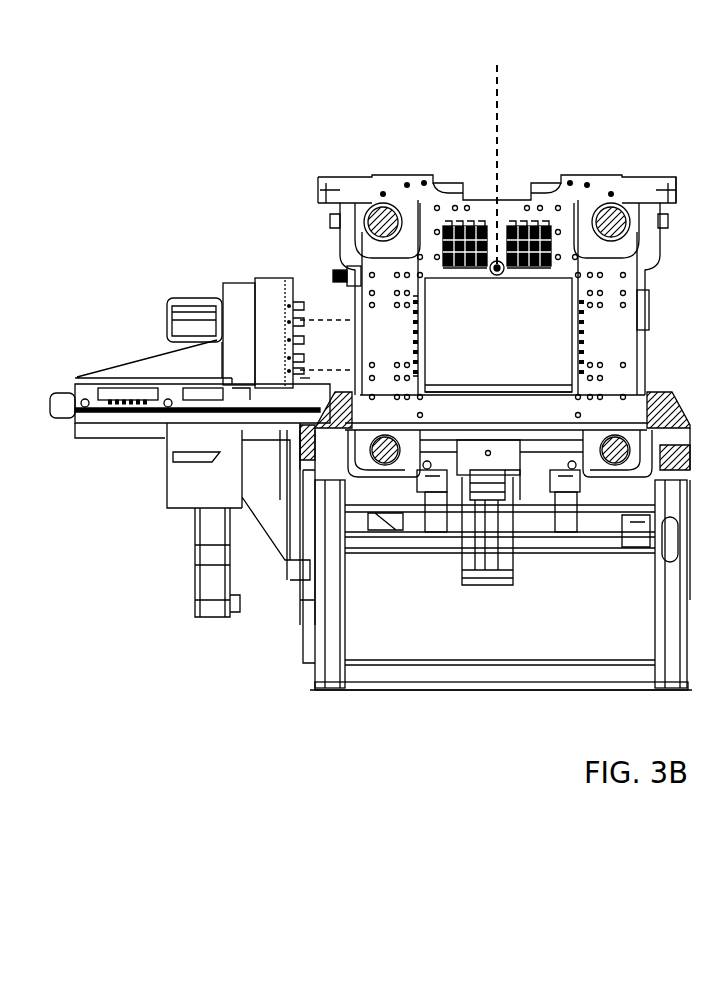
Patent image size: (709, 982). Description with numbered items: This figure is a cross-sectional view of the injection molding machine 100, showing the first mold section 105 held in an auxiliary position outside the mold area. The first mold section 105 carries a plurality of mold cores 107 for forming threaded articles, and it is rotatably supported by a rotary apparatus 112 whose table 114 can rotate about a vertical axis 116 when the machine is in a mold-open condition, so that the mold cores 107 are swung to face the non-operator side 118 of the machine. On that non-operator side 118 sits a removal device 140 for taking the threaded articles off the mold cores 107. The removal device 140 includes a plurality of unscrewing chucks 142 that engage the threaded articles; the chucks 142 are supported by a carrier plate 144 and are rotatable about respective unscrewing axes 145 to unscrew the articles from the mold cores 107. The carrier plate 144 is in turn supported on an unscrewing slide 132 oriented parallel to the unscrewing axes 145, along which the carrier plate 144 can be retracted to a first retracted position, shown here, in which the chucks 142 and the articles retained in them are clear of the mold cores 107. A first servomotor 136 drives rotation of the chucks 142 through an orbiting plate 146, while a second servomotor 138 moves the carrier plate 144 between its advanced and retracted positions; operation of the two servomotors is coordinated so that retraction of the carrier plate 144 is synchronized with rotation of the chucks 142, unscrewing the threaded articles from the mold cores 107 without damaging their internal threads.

The injection molding machine 100 is at (627, 62).
The first mold section 105 is at (423, 367).
The mold cores 107 is at (416, 291).
The rotary apparatus 112 is at (546, 540).
The table 114 is at (577, 424).
The vertical axis 116 is at (500, 68).
The non-operator side 118 is at (294, 684).
The unscrewing slide 132 is at (118, 408).
The first servomotor 136 is at (168, 314).
The second servomotor 138 is at (50, 392).
The removal device 140 is at (214, 262).
The unscrewing chucks 142 is at (300, 297).
The carrier plate 144 is at (290, 279).
The unscrewing axes 145 is at (327, 322).
The orbiting plate 146 is at (315, 373).